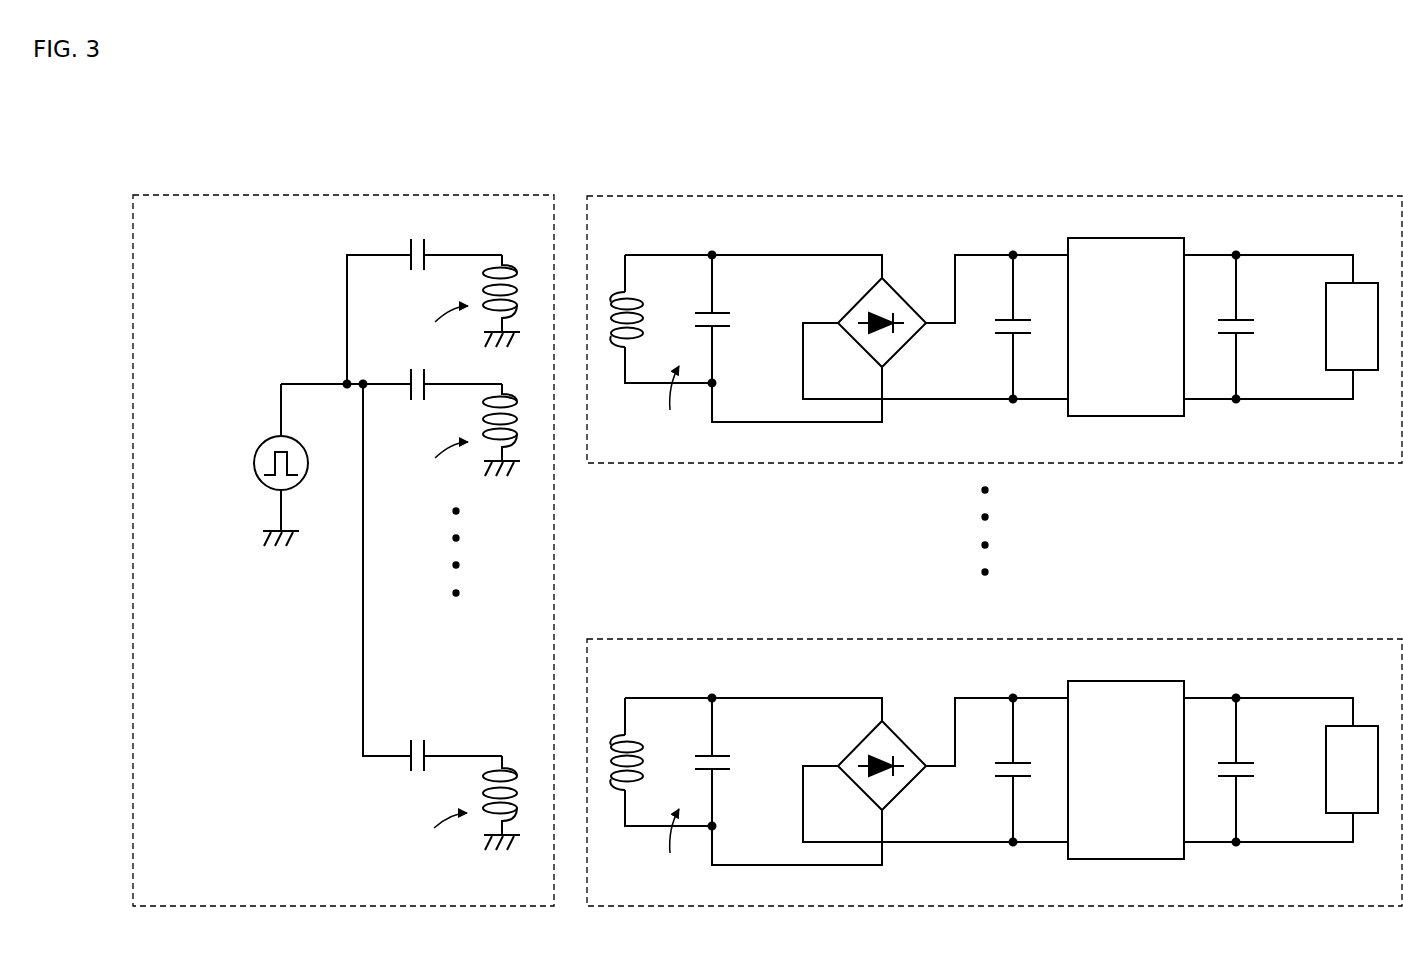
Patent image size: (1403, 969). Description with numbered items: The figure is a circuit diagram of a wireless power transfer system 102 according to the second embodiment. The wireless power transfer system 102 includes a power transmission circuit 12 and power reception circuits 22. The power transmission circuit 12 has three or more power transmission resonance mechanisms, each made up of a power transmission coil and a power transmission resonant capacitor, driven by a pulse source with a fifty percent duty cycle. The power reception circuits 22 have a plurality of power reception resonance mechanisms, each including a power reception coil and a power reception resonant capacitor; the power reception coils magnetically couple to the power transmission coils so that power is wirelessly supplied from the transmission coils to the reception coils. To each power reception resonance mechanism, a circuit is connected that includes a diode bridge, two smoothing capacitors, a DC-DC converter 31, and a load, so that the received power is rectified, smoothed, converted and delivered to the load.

The wireless power transfer system 102 is at (1283, 96).
The power transmission circuit 12 is at (322, 195).
The power reception circuits 22 is at (875, 195).
The DC-DC converter 31 is at (1128, 238).